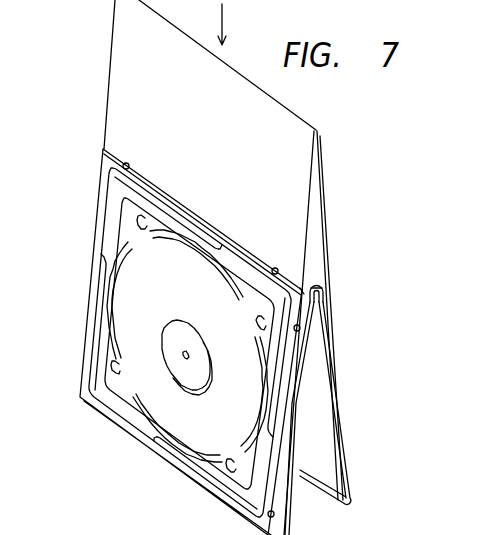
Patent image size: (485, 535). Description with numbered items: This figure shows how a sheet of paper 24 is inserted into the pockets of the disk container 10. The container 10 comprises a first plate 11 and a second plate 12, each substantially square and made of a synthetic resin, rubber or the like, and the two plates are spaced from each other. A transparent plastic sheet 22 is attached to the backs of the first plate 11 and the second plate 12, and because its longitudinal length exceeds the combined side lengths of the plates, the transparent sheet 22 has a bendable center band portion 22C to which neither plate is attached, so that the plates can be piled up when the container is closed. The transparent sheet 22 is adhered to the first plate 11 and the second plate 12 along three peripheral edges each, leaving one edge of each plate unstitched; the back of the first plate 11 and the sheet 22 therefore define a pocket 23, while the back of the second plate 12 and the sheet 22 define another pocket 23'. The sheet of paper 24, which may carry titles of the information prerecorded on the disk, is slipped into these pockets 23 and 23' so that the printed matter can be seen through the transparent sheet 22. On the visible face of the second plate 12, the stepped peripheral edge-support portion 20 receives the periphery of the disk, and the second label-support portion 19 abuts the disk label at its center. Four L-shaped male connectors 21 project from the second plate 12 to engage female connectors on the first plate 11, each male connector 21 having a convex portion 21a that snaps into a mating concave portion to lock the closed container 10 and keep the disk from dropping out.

The container 10 is at (421, 305).
The first plate 11 is at (338, 395).
The second plate 12 is at (95, 290).
The second label-support portion 19 is at (193, 378).
The peripheral edge-support portion 20 is at (120, 312).
The male connector 21 is at (166, 350).
The convex portion 21a is at (219, 314).
The transparent sheet 22 is at (343, 500).
The center band portion 22C is at (328, 298).
The pocket 23 is at (346, 274).
The pocket 23' is at (336, 263).
The sheet of paper 24 is at (297, 165).